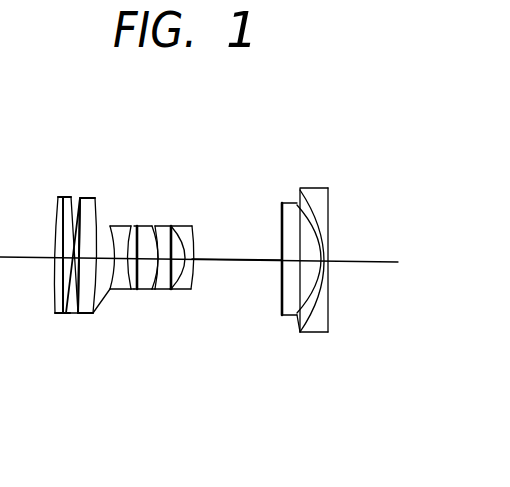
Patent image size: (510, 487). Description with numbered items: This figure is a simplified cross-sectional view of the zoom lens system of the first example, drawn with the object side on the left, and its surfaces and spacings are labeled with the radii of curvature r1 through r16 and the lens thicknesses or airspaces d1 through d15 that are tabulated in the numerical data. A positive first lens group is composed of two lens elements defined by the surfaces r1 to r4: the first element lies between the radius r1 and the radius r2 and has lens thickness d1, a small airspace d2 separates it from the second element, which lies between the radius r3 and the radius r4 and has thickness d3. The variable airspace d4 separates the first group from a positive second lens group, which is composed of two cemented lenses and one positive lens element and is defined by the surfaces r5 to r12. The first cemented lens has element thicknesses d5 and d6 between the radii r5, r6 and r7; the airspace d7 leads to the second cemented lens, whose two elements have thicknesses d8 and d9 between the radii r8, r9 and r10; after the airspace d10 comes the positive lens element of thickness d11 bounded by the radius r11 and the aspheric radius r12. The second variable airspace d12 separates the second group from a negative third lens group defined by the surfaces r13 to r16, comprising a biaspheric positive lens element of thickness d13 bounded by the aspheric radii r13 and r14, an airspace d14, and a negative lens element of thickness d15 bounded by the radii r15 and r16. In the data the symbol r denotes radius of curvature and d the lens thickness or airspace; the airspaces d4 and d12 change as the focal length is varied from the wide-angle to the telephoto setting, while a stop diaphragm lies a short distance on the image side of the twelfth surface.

The radius of curvature of first surface r1 is at (58, 204).
The radius of curvature of second surface r2 is at (72, 197).
The radius of curvature of third surface r3 is at (80, 198).
The radius of curvature of fourth surface r4 is at (95, 198).
The radius of curvature of fifth surface r5 is at (112, 226).
The radius of curvature of sixth surface r6 is at (122, 226).
The radius of curvature of seventh surface r7 is at (133, 226).
The radius of curvature of eighth surface r8 is at (143, 226).
The radius of curvature of ninth surface r9 is at (155, 226).
The radius of curvature of tenth surface r10 is at (168, 226).
The radius of curvature of eleventh surface r11 is at (178, 226).
The radius of curvature of twelfth surface r12 is at (192, 227).
The radius of curvature of thirteenth surface r13 is at (282, 215).
The radius of curvature of fourteenth surface r14 is at (292, 203).
The radius of curvature of fifteenth surface r15 is at (317, 190).
The radius of curvature of sixteenth surface r16 is at (328, 212).
The lens thickness of first lens element d1 is at (60, 315).
The airspace between first and second lens elements d2 is at (85, 314).
The lens thickness of second lens element d3 is at (95, 314).
The variable airspace between first and second lens groups d4 is at (103, 292).
The lens thickness of first element of first cemented lens d5 is at (122, 290).
The lens thickness of second element of first cemented lens d6 is at (133, 291).
The airspace between first and second cemented lenses d7 is at (145, 291).
The lens thickness of first element of second cemented lens d8 is at (153, 291).
The lens thickness of second element of second cemented lens d9 is at (163, 291).
The airspace between second cemented lens and positive lens element d10 is at (172, 291).
The lens thickness of positive lens element d11 is at (183, 291).
The variable airspace between second and third lens groups d12 is at (247, 262).
The lens thickness of biaspheric positive lens element d13 is at (290, 317).
The airspace between biaspheric positive element and negative lens element d14 is at (318, 333).
The lens thickness of negative lens element d15 is at (330, 282).